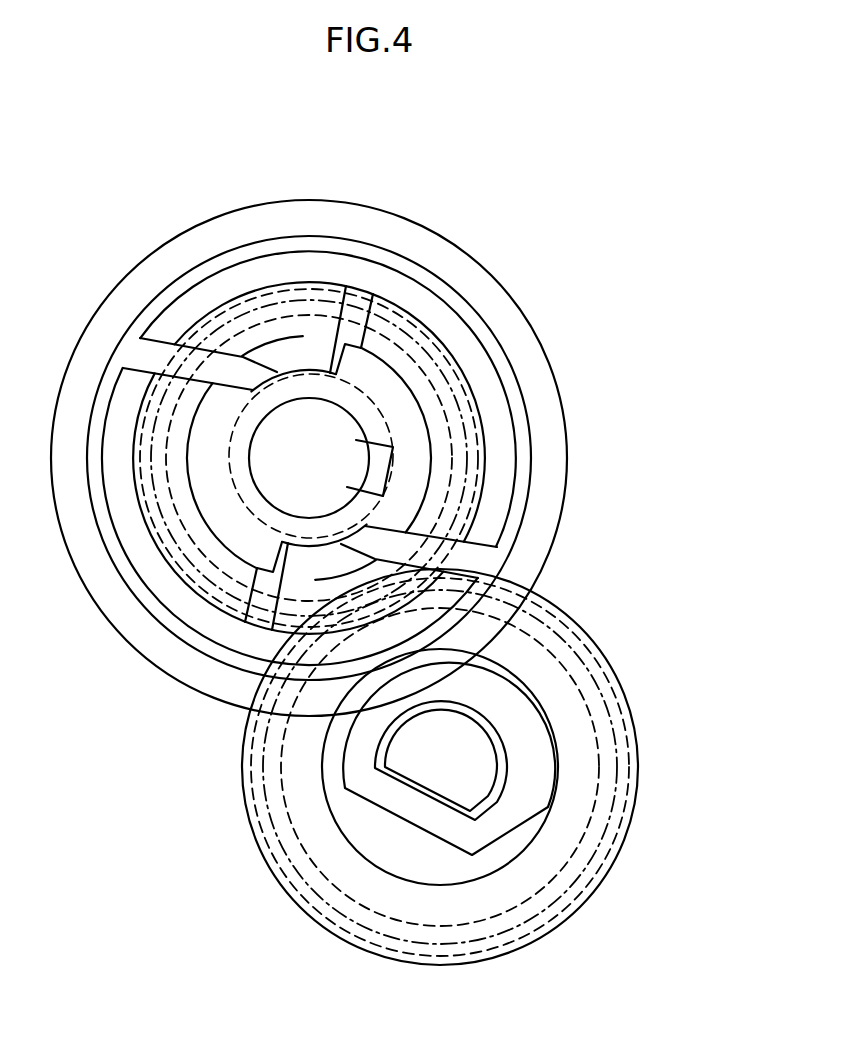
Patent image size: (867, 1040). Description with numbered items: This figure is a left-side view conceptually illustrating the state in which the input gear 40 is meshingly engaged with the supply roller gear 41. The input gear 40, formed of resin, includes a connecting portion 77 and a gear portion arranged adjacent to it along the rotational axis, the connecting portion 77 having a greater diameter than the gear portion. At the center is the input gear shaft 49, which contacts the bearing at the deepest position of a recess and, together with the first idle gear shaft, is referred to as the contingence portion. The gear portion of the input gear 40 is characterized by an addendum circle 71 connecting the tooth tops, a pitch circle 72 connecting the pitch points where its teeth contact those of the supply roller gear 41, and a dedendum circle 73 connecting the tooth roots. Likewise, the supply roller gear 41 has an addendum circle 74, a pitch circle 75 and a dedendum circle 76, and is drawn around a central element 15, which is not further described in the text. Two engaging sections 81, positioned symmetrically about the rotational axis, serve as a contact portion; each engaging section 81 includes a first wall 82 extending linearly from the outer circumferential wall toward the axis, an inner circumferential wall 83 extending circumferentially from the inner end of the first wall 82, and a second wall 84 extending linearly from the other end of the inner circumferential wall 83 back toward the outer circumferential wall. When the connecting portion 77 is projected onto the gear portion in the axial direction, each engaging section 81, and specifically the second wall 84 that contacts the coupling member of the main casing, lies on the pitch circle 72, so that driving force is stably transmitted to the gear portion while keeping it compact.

The shaft 15 is at (437, 763).
The input gear 40 is at (545, 436).
The supply roller gear 41 is at (565, 818).
The input gear shaft 49 is at (247, 393).
The addendum circle 71 is at (430, 340).
The pitch circle 72 is at (447, 377).
The dedendum circle 73 is at (438, 397).
The addendum circle 74 is at (573, 632).
The pitch circle 75 is at (585, 660).
The dedendum circle 76 is at (578, 688).
The connecting portion 77 is at (518, 508).
The engaging section 81 is at (370, 112).
The first wall 82 is at (338, 305).
The inner circumferential wall 83 is at (303, 338).
The second wall 84 is at (282, 352).